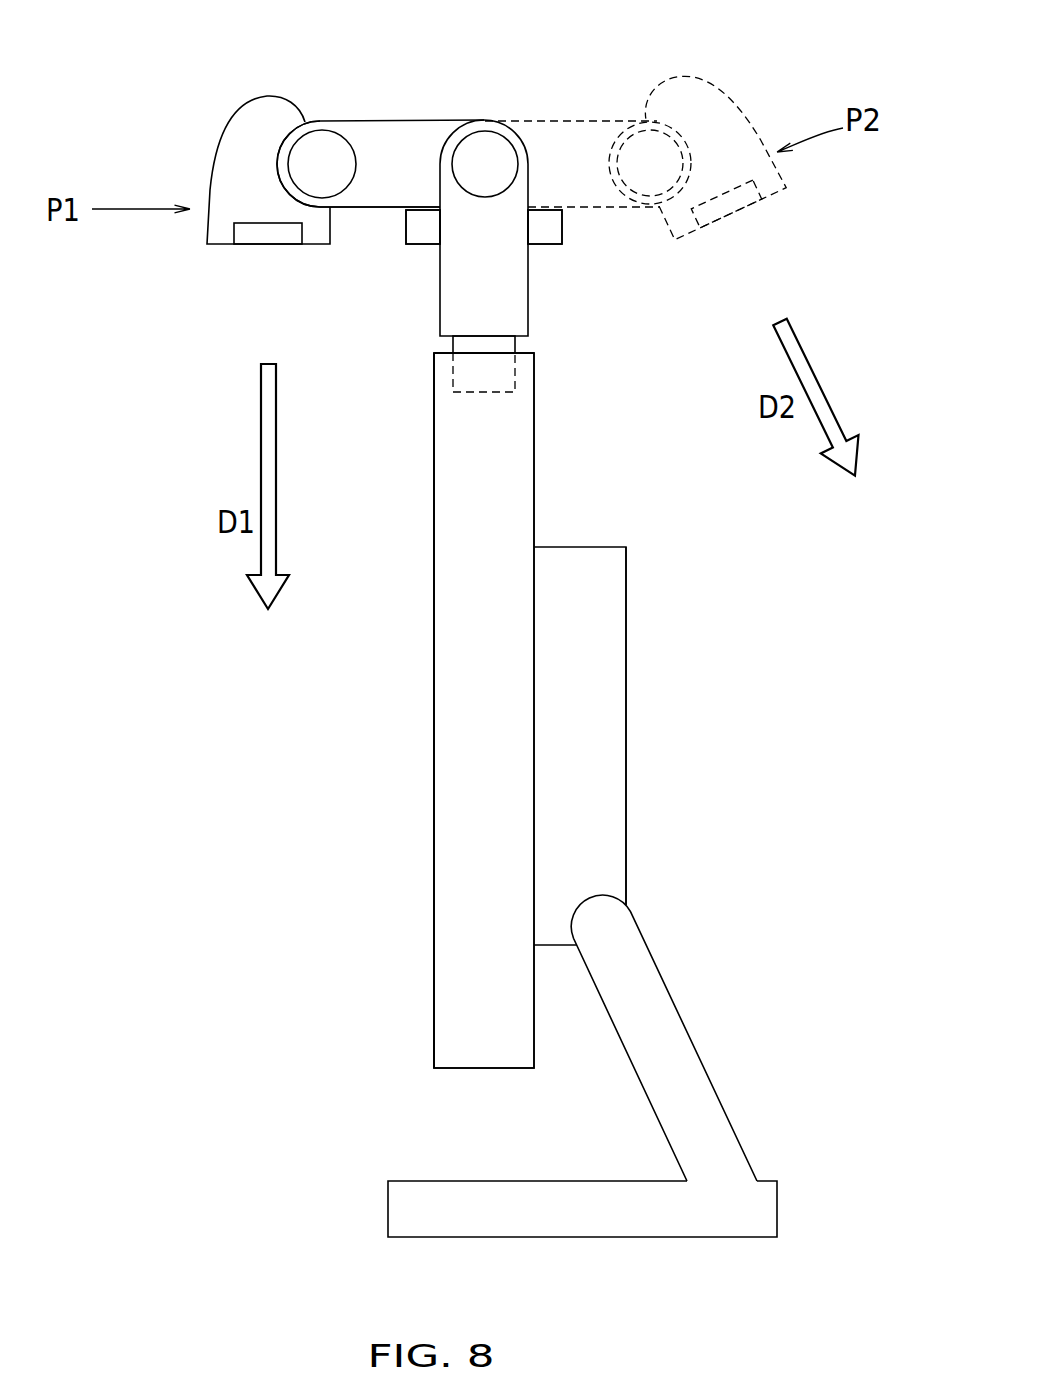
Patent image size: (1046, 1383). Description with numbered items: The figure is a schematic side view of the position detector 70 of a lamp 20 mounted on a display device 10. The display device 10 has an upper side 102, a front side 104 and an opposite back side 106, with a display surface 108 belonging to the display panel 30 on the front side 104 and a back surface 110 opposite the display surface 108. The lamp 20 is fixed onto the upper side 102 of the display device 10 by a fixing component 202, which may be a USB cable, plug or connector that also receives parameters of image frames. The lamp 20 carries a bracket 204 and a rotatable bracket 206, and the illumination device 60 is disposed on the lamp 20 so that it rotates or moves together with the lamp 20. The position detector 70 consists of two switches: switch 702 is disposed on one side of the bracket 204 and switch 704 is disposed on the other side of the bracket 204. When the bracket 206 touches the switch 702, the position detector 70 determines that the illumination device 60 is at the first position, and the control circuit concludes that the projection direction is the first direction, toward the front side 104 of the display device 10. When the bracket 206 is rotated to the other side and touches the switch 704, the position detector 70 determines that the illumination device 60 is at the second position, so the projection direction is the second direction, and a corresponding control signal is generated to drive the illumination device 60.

The display device 10 is at (683, 1080).
The lamp 20 is at (347, 100).
The display panel 30 is at (462, 982).
The illumination device 60 is at (257, 235).
The position detector 70 is at (595, 83).
The upper side 102 is at (418, 343).
The front side 104 is at (394, 591).
The back side 106 is at (680, 717).
The display surface 108 is at (434, 711).
The back surface 110 is at (626, 570).
The fixing component 202 is at (502, 345).
The bracket 204 is at (528, 281).
The bracket 206 is at (350, 212).
The switch 702 is at (422, 226).
The switch 704 is at (546, 226).